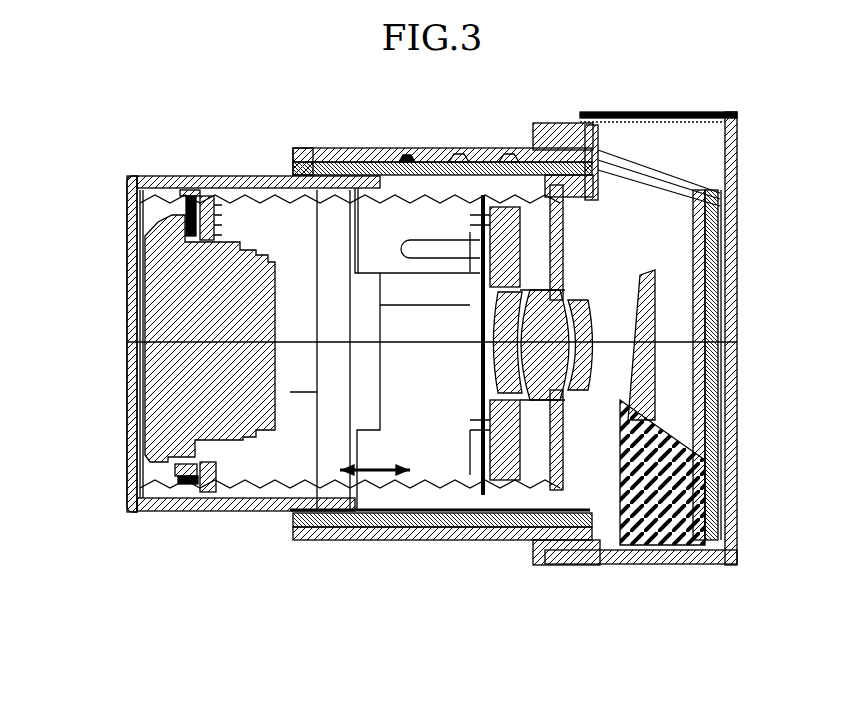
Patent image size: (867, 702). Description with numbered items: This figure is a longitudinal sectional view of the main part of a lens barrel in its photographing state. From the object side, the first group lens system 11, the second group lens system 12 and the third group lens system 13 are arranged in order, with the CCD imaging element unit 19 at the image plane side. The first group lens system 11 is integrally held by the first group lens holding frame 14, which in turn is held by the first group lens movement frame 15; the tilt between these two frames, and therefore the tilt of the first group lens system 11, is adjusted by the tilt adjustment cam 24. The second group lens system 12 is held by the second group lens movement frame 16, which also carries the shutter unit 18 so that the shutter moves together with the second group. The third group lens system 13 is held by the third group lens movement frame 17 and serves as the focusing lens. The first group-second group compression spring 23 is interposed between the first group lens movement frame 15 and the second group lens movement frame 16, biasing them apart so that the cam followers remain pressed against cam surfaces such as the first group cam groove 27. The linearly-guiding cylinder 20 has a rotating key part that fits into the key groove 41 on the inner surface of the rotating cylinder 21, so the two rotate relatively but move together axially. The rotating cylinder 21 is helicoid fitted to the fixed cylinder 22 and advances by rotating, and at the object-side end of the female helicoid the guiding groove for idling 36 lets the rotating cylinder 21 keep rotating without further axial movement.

The first group lens system 11 is at (236, 275).
The second group lens system 12 is at (585, 395).
The third group lens system 13 is at (737, 437).
The first group lens holding frame 14 is at (137, 180).
The first group lens movement frame 15 is at (197, 186).
The second group lens movement frame 16 is at (553, 215).
The third group lens movement frame 17 is at (655, 272).
The shutter unit 18 is at (497, 437).
The CCD imaging element unit 19 is at (736, 393).
The linearly-guiding cylinder 20 is at (348, 163).
The rotating cylinder 21 is at (408, 150).
The fixed cylinder 22 is at (690, 563).
The first group-second group compression spring 23 is at (383, 487).
The tilt adjustment cam 24 is at (211, 190).
The first group cam groove 27 is at (473, 150).
The guiding groove for idling 36 is at (543, 563).
The key groove 41 is at (308, 152).